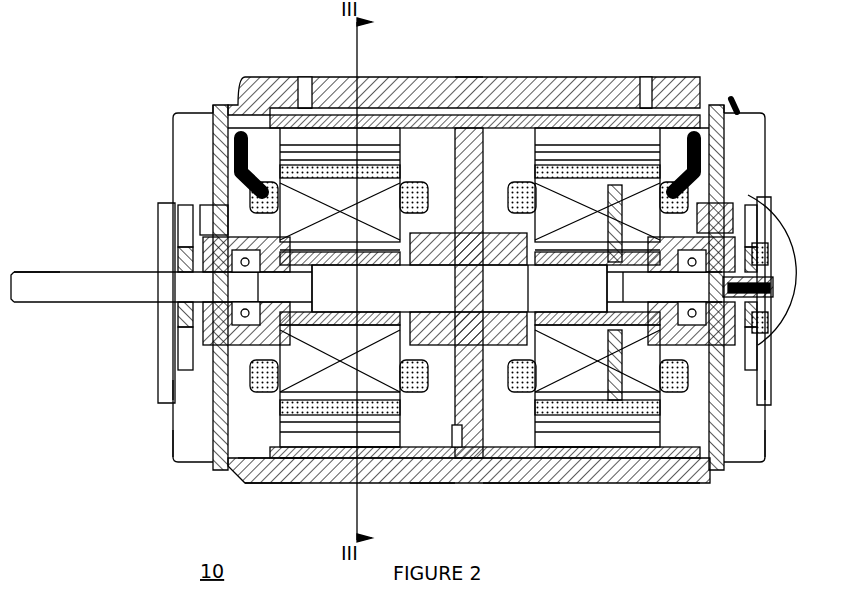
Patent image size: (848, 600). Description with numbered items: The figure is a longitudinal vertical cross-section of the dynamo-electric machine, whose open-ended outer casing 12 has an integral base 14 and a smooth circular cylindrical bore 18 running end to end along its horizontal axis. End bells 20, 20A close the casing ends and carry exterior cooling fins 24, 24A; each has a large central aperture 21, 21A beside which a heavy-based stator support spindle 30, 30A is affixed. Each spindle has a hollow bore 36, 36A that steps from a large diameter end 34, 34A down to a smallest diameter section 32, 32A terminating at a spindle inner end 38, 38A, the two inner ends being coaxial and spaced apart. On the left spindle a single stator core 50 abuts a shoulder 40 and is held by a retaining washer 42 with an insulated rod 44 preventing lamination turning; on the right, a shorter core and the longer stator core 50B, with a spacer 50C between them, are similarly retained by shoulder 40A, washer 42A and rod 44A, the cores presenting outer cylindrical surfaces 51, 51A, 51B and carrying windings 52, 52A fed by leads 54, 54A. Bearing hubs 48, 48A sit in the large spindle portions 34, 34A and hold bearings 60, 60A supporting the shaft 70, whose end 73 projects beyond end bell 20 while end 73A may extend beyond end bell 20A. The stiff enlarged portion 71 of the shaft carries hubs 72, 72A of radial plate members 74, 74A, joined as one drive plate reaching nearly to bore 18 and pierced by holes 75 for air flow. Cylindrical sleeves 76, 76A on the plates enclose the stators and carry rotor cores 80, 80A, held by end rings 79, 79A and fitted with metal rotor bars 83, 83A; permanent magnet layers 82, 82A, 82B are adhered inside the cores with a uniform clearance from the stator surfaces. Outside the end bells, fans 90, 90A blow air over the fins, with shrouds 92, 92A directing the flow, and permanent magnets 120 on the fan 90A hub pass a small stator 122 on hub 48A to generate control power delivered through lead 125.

The outer casing 12 is at (466, 95).
The integral base 14 is at (277, 483).
The circular cylindrical bore 18 is at (480, 483).
The end bell 20 is at (212, 110).
The end bell 20A is at (738, 112).
The central aperture 21 is at (190, 213).
The central aperture 21A is at (748, 213).
The cooling fins 24 is at (196, 131).
The cooling fins 24A is at (742, 132).
The stator support spindle 30 is at (176, 430).
The stator support spindle 30A is at (768, 445).
The smallest diameter section 32 is at (303, 472).
The smallest diameter section 32A is at (650, 472).
The large diameter end 34 is at (185, 390).
The large diameter end 34A is at (757, 392).
The longitudinal hollow bore 36 is at (329, 447).
The longitudinal hollow bore 36A is at (596, 447).
The spindle inner end 38 is at (433, 480).
The spindle inner end 38A is at (500, 480).
The shoulder 40 is at (232, 471).
The shoulder 40A is at (722, 471).
The retaining washer 42 is at (412, 222).
The retaining washer 42A is at (522, 222).
The insulated rod 44 is at (323, 245).
The insulated rod 44A is at (573, 245).
The bearing retaining hub 48 is at (210, 332).
The bearing retaining hub 48A is at (747, 340).
The stator core 50 is at (304, 105).
The stator core 50B is at (612, 150).
The spacer 50C is at (646, 105).
The outer circular cylindrical surface 51 is at (373, 433).
The outer circular cylindrical surface 51A is at (612, 447).
The outer circular cylindrical surface 51B is at (572, 445).
The windings 52 is at (222, 205).
The windings 52A is at (718, 205).
The electrical leads 54 is at (242, 128).
The electrical leads 54A is at (693, 130).
The bearing 60 is at (205, 350).
The bearing 60A is at (743, 363).
The shaft 70 is at (148, 290).
The enlarged diameter portion 71 is at (455, 289).
The hub 72 is at (459, 289).
The hub 72A is at (541, 289).
The shaft end 73 is at (50, 272).
The shaft end 73A is at (745, 287).
The radial plate member 74 is at (462, 118).
The radial plate member 74A is at (483, 118).
The holes 75 is at (458, 433).
The circular cylindrical sleeve 76 is at (353, 145).
The circular cylindrical sleeve 76A is at (545, 143).
The end ring 79 is at (264, 468).
The end ring 79A is at (675, 465).
The rotor core 80 is at (350, 193).
The rotor core 80A is at (560, 193).
The permanent magnet layer 82 is at (280, 478).
The permanent magnet layer 82A is at (667, 478).
The permanent magnet layer 82B is at (540, 478).
The metal rotor bars 83 is at (258, 137).
The metal rotor bars 83A is at (688, 135).
The cooling fan 90 is at (205, 235).
The cooling fan 90A is at (738, 235).
The shroud 92 is at (160, 327).
The shroud 92A is at (775, 328).
The permanent magnets 120 is at (758, 255).
The small electrical stator 122 is at (768, 228).
The electrical lead 125 is at (736, 104).